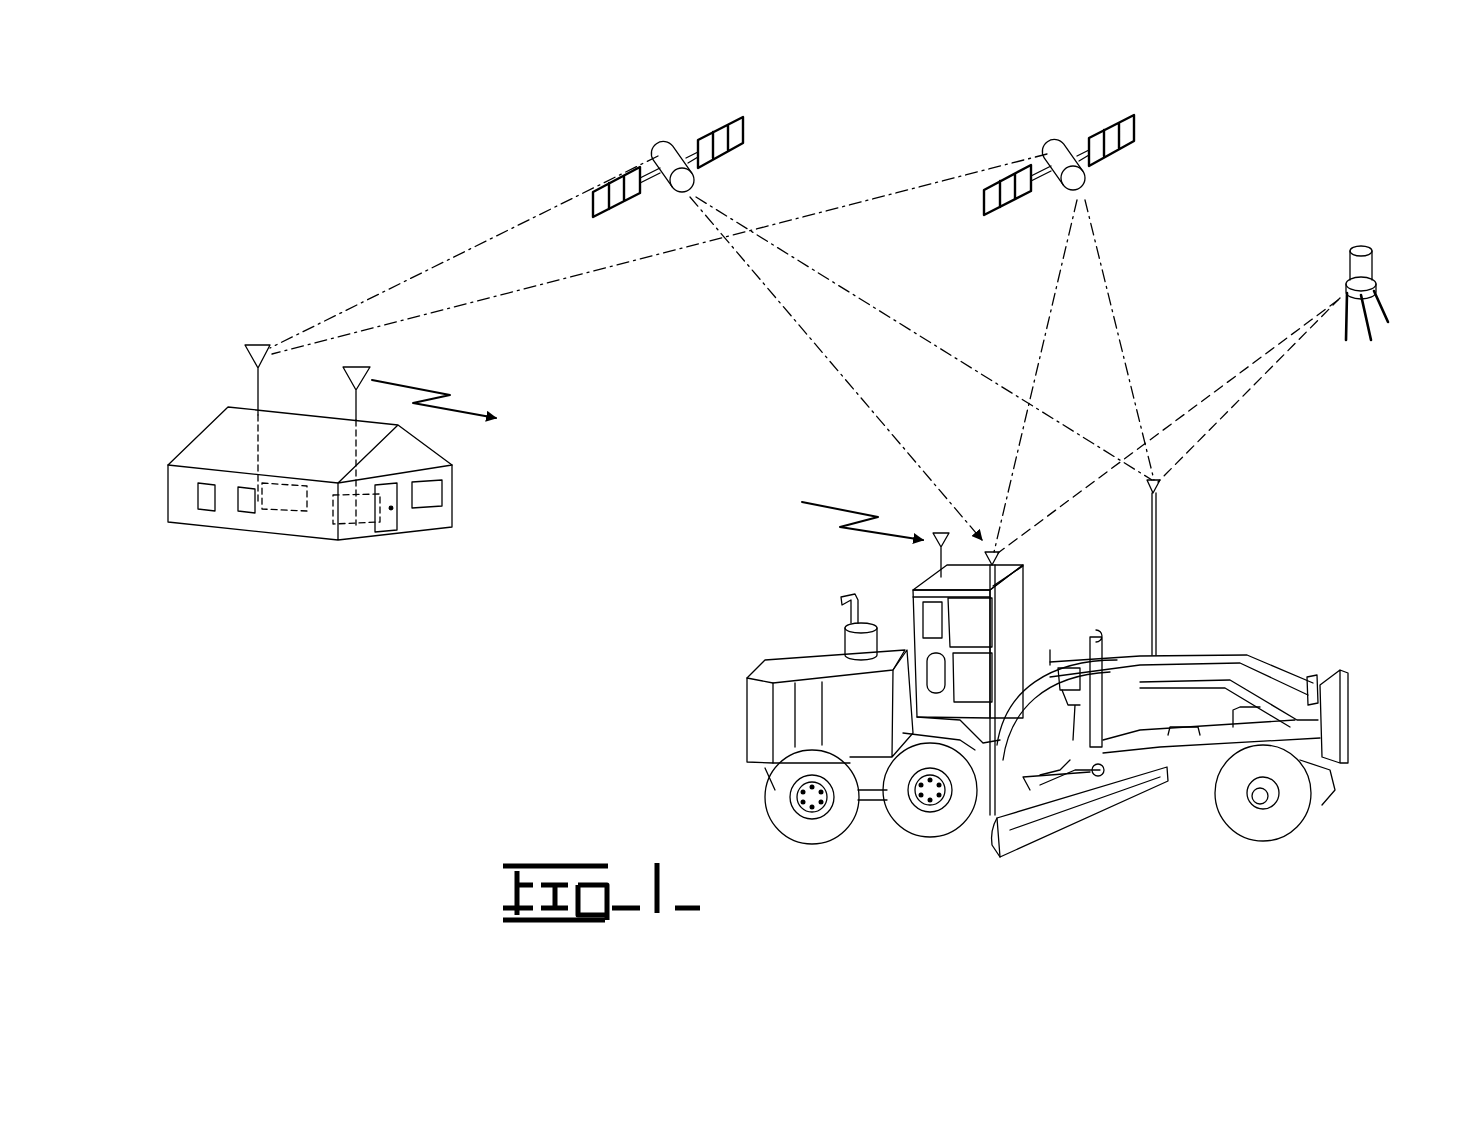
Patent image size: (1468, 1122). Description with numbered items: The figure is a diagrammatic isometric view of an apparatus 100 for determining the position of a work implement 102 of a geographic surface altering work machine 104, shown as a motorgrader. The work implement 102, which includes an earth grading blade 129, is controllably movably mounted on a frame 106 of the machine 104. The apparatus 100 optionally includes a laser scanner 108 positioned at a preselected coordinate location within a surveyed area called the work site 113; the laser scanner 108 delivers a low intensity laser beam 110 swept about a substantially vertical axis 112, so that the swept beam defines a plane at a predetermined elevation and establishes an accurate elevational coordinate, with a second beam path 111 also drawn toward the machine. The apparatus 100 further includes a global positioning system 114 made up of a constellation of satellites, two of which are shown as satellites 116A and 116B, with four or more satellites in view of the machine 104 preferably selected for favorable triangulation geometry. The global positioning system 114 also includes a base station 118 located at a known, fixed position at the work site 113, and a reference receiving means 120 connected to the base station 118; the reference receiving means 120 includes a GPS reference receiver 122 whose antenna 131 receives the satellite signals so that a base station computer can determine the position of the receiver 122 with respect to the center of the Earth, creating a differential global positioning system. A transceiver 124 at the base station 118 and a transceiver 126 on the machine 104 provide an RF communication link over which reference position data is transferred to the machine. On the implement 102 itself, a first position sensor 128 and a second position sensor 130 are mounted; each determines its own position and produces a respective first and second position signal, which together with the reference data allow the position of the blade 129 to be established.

The apparatus 100 is at (556, 768).
The work implement 102 is at (1005, 659).
The work machine 104 is at (738, 742).
The frame 106 is at (1296, 676).
The laser scanner 108 is at (1336, 259).
The laser beam 110 is at (1258, 387).
The laser beam to cab receiver 111 is at (1205, 427).
The vertical axis 112 is at (1364, 246).
The work site 113 is at (675, 597).
The global positioning system 114 is at (510, 582).
The satellite 116A is at (660, 150).
The satellite 116B is at (1050, 150).
The base station 118 is at (470, 492).
The reference receiving means 120 is at (245, 383).
The GPS reference receiver 122 is at (265, 512).
The transceiver 124 is at (386, 364).
The transceiver 126 is at (928, 550).
The first position sensor 128 is at (1171, 499).
The earth grading blade 129 is at (1032, 826).
The second position sensor 130 is at (984, 524).
The antenna 131 is at (253, 348).